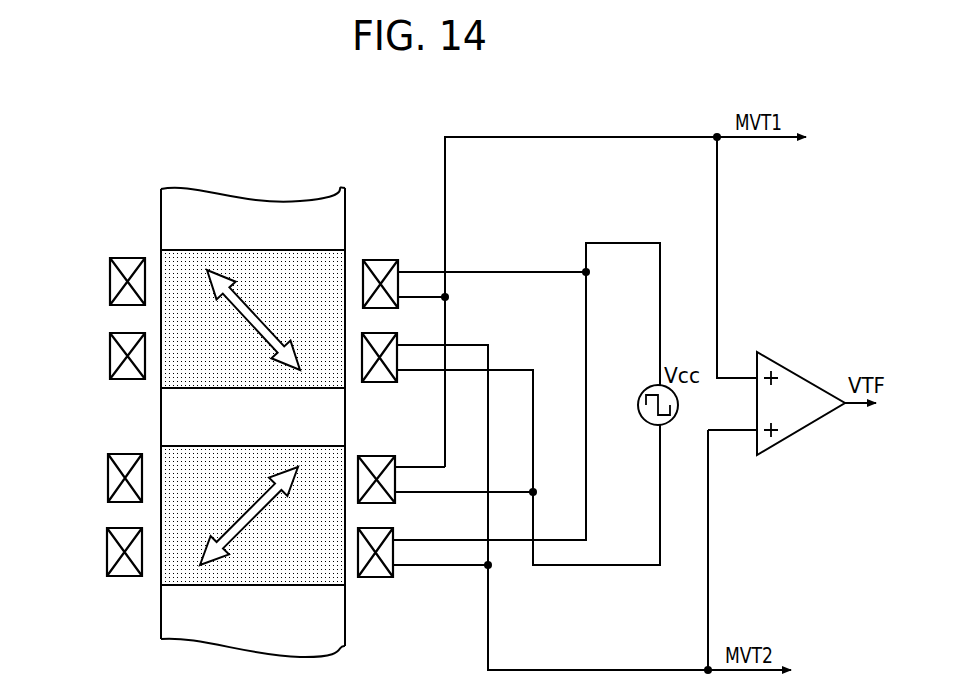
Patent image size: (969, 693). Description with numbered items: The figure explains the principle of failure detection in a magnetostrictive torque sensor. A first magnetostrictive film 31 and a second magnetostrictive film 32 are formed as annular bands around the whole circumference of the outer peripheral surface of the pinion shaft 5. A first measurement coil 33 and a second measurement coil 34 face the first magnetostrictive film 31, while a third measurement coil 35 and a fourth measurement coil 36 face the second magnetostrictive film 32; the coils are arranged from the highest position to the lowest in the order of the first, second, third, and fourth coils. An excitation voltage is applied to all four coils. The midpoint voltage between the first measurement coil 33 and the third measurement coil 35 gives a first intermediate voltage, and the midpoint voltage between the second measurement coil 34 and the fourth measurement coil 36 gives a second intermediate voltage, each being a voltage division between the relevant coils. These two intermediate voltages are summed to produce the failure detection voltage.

The pinion shaft 5 is at (153, 637).
The first magnetostrictive film 31 is at (193, 266).
The second magnetostrictive film 32 is at (173, 565).
The first measurement coil 33 is at (118, 278).
The second measurement coil 34 is at (117, 353).
The third measurement coil 35 is at (117, 478).
The fourth measurement coil 36 is at (113, 553).